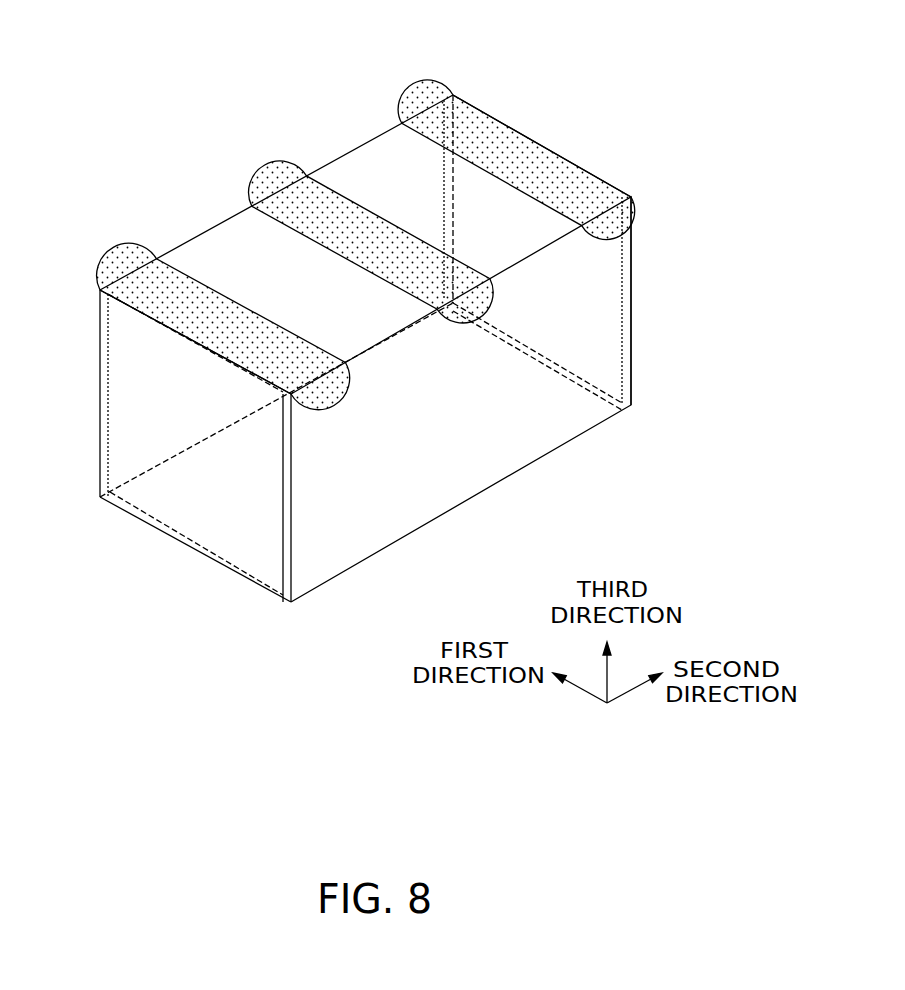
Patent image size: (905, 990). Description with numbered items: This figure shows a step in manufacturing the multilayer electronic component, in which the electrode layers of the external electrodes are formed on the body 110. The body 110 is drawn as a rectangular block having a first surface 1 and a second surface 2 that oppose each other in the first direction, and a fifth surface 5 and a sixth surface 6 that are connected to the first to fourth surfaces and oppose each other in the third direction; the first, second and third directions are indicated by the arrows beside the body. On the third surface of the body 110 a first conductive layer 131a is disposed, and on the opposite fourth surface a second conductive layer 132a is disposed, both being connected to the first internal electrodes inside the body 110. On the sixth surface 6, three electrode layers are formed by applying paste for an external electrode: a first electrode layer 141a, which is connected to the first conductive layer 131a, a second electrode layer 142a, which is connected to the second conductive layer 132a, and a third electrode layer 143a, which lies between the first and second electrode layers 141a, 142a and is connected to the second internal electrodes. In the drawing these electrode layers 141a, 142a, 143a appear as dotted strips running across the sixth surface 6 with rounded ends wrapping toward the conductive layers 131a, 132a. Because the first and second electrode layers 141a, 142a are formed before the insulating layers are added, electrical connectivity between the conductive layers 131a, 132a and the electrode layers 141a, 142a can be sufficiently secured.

The first surface 1 is at (522, 447).
The second surface 2 is at (388, 161).
The fifth surface 5 is at (406, 496).
The sixth surface 6 is at (230, 249).
The body 110 is at (199, 258).
The first conductive layer 131a is at (205, 533).
The second conductive layer 132a is at (632, 285).
The first electrode layer 141a is at (128, 270).
The second electrode layer 142a is at (452, 100).
The third electrode layer 143a is at (292, 190).